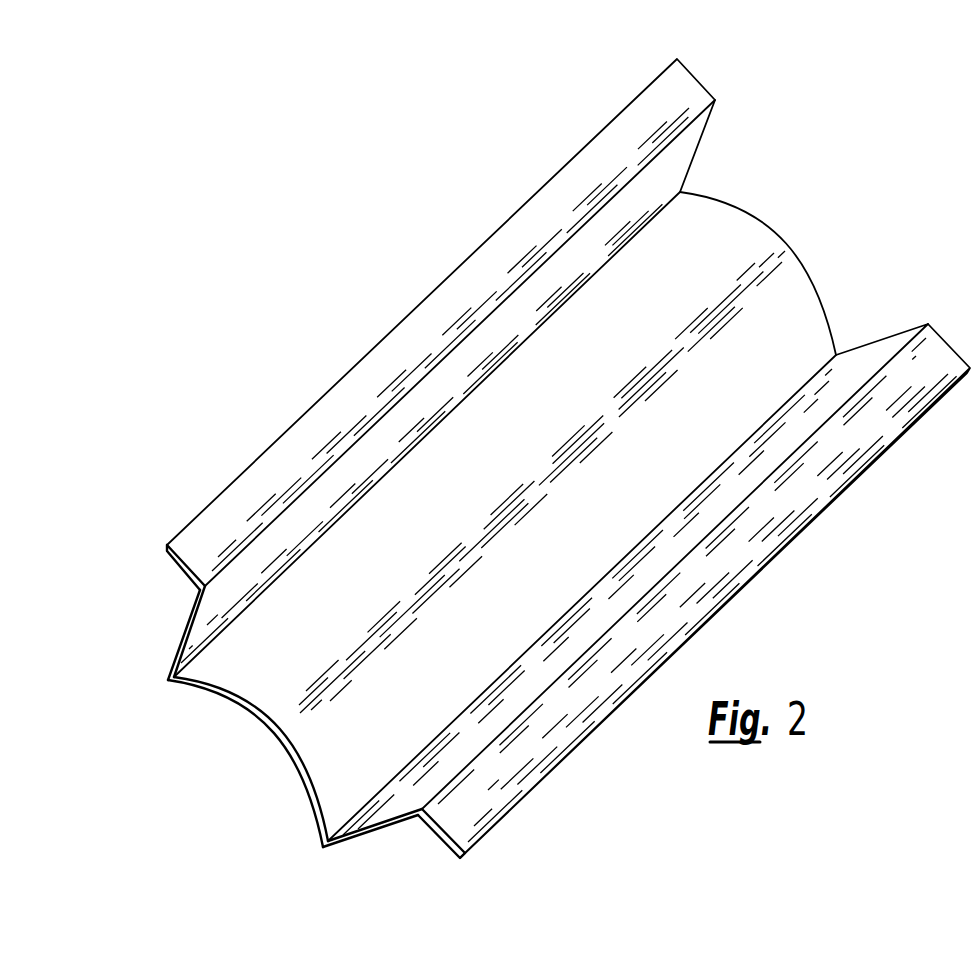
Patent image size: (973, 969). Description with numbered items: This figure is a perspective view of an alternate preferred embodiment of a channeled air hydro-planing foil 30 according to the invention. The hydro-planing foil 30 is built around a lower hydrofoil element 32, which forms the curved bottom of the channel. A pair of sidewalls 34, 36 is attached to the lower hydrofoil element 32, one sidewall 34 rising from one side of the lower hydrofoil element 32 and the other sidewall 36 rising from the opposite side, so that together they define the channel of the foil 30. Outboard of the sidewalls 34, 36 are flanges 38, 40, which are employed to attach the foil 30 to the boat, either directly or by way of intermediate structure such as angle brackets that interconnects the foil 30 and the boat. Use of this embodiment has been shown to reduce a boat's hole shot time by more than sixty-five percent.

The channeled air hydro-planing foil 30 is at (362, 277).
The lower hydrofoil element 32 is at (267, 727).
The sidewall 34 is at (173, 640).
The sidewall 36 is at (383, 832).
The flange 38 is at (235, 482).
The flange 40 is at (552, 767).